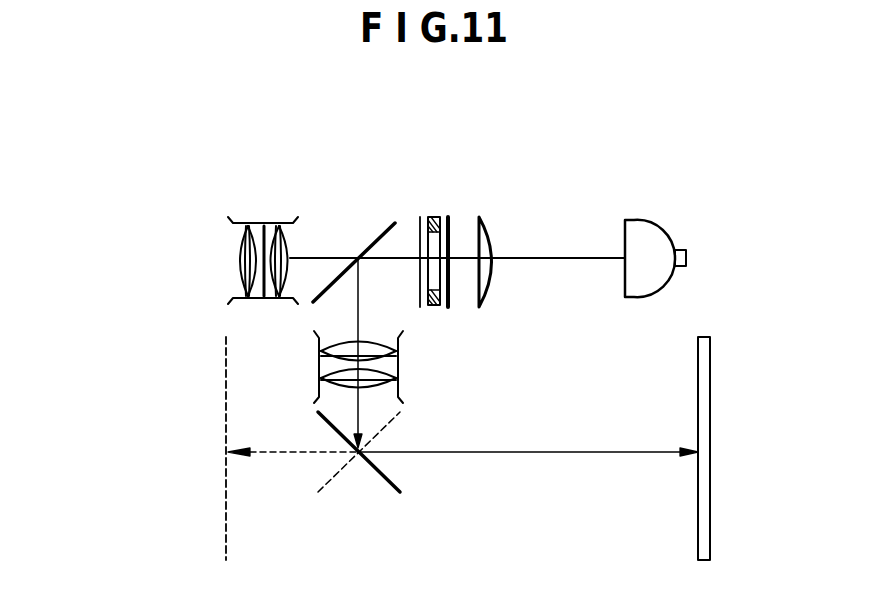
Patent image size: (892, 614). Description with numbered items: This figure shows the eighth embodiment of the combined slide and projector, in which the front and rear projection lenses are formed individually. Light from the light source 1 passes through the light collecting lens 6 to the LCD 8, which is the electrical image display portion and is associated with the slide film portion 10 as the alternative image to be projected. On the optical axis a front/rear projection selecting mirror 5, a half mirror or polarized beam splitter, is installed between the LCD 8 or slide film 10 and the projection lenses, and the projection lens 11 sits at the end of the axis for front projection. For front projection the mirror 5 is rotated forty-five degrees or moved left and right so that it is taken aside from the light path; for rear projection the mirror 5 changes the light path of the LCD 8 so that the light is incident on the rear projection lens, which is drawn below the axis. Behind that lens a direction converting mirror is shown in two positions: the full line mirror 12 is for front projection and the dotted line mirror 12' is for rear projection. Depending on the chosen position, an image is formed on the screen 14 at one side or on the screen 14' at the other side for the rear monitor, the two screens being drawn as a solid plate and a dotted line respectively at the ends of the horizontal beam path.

The light source 1 is at (651, 245).
The front/rear projection selecting mirror 5 is at (358, 254).
The light collecting lens 6 is at (481, 216).
The electrical image display portion (LCD) 8 is at (432, 217).
The slide film portion 10 is at (434, 155).
The projection lens 11 is at (263, 242).
The direction converting mirror 12 is at (359, 473).
The direction converting mirror 12' is at (395, 452).
The screen 14 is at (733, 448).
The screen 14' is at (194, 448).